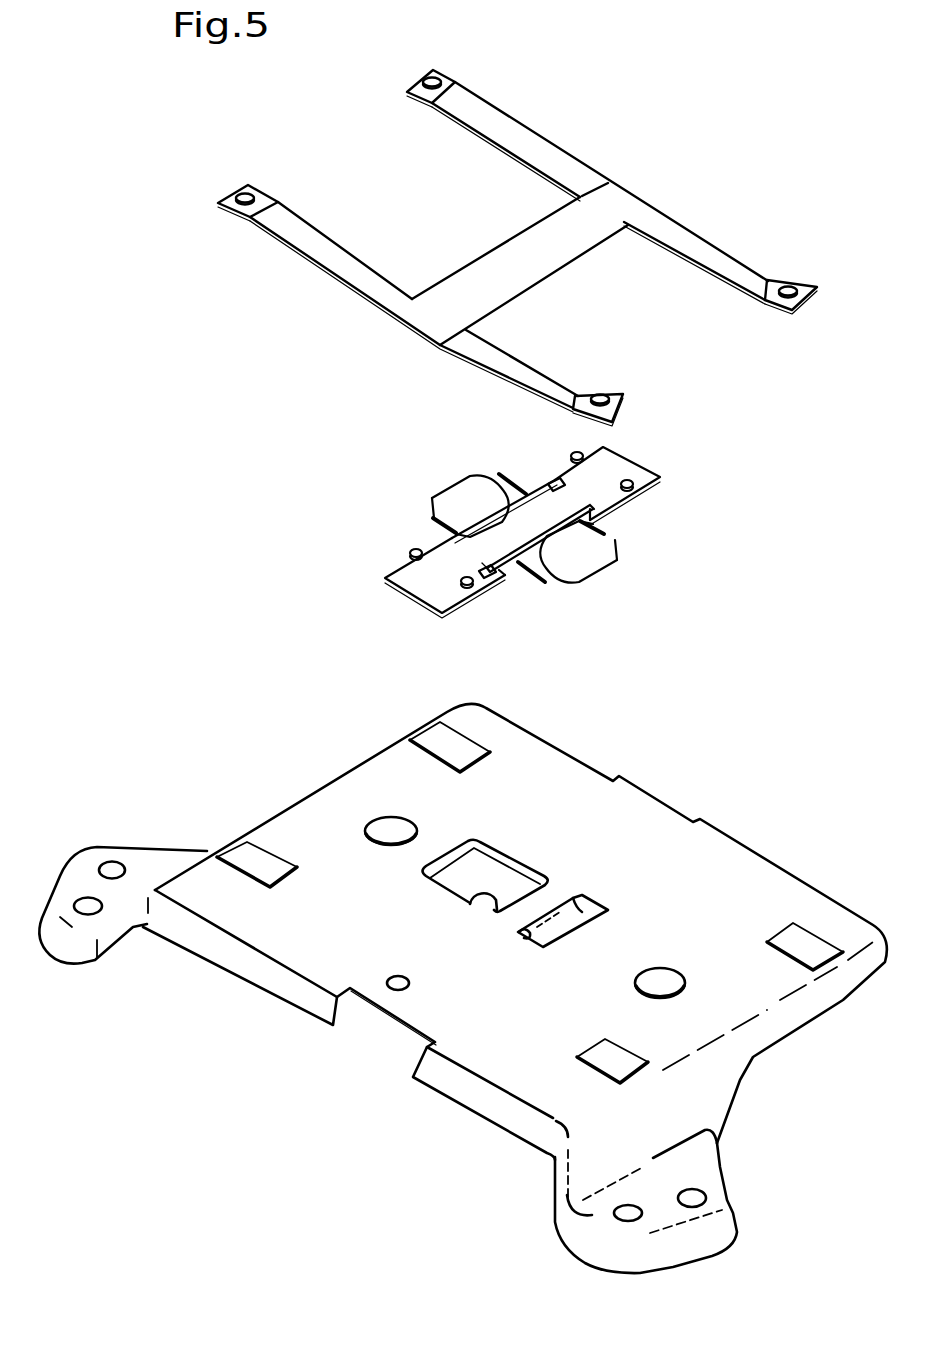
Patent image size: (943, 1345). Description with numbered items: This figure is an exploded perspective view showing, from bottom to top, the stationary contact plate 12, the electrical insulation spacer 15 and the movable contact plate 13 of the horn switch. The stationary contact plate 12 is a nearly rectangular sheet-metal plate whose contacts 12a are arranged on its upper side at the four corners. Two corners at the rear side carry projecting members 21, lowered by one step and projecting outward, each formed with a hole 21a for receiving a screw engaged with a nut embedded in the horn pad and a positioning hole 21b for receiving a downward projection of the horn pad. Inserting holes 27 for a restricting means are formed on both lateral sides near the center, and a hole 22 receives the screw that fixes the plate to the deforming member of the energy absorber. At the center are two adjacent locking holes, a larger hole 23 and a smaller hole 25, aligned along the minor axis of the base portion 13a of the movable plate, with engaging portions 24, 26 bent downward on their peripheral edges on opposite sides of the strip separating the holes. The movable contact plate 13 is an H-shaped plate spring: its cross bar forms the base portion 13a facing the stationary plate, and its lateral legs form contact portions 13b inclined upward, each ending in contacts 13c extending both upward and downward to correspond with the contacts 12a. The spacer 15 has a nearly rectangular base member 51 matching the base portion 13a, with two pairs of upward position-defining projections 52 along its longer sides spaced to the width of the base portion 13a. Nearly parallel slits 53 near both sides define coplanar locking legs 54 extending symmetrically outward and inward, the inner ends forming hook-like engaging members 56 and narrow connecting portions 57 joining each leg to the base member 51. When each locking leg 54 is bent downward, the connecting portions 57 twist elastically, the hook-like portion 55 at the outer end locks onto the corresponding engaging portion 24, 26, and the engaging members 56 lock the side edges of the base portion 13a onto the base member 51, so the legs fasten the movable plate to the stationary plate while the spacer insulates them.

The stationary contact plate 12 is at (297, 761).
The contacts 12a is at (243, 855).
The movable contact plate 13 is at (688, 141).
The base portion 13a is at (538, 259).
The contact portions 13b is at (458, 84).
The contacts 13c is at (420, 88).
The electrical insulation spacer 15 is at (326, 496).
The projecting members 21 is at (87, 935).
The hole 21a is at (92, 897).
The positioning hole 21b is at (122, 862).
The hole 22 is at (398, 975).
The locking hole 23 is at (517, 863).
The engaging portion 24 is at (480, 903).
The locking hole 25 is at (586, 898).
The engaging portion 26 is at (557, 927).
The inserting holes 27 is at (392, 817).
The base member 51 is at (420, 589).
The position-defining projections 52 is at (575, 455).
The slits 53 is at (556, 487).
The locking legs 54 is at (463, 497).
The hook-like portion 55 is at (432, 519).
The hook-like engaging member 56 is at (498, 480).
The connecting portions 57 is at (540, 480).